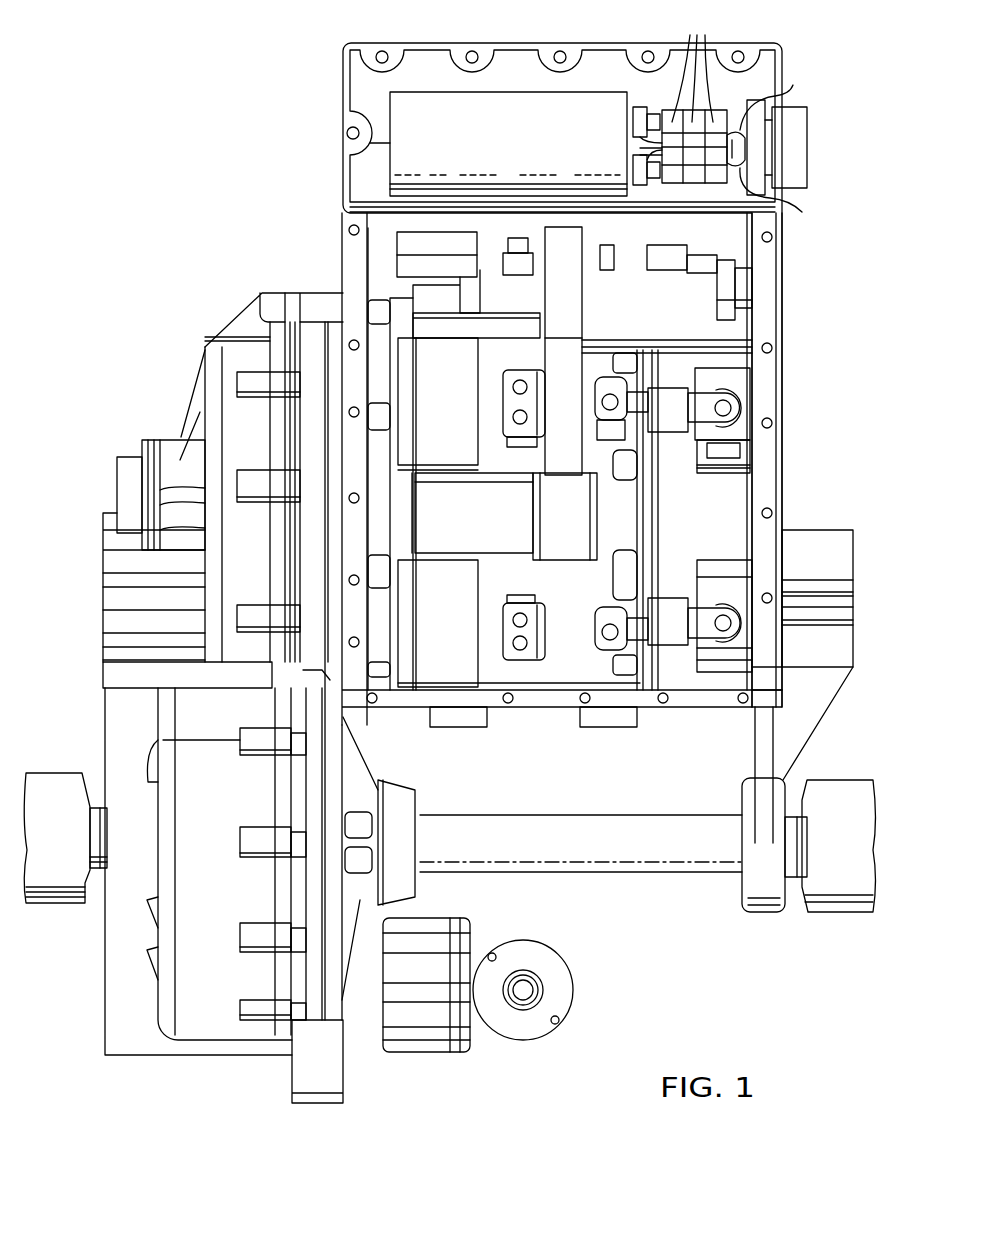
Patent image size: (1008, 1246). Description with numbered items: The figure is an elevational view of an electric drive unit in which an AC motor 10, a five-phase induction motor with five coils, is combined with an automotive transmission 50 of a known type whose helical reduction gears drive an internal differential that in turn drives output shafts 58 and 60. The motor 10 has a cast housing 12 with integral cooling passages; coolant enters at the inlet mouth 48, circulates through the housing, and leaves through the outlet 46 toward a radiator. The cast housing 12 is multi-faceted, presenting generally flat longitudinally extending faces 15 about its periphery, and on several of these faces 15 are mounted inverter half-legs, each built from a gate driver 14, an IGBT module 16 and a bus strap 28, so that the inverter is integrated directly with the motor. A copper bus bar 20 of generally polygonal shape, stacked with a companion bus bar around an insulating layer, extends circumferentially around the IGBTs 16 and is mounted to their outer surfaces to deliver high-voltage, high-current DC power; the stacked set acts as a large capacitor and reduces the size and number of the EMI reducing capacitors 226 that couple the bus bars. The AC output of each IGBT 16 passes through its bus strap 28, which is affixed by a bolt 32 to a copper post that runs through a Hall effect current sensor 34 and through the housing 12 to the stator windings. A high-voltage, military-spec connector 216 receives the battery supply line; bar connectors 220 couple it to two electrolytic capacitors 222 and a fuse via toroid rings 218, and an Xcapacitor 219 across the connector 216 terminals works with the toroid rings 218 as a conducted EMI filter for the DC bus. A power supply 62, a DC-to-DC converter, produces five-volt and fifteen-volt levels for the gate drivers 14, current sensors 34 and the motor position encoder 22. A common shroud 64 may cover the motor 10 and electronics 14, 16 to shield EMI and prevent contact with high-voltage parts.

The AC motor 10 is at (404, 289).
The cast housing 12 is at (743, 548).
The gate driver 14 is at (463, 248).
The faces 15 is at (637, 477).
The IGBT module 16 is at (600, 463).
The bus bar 20 is at (573, 243).
The motor position encoder 22 is at (125, 472).
The bus strap 28 is at (710, 392).
The bolt 32 is at (727, 420).
The current sensor 34 is at (742, 398).
The outlet 46 is at (620, 713).
The inlet mouth 48 is at (453, 713).
The automotive transmission 50 is at (174, 405).
The output shaft 58 is at (55, 780).
The output shaft 60 is at (837, 802).
The power supply 62 is at (683, 332).
The shroud 64 is at (780, 54).
The connector 216 is at (793, 157).
The toroid rings 218 is at (694, 91).
The Xcapacitor 219 is at (740, 143).
The bar connectors 220 is at (795, 148).
The electrolytic capacitors 222 is at (420, 103).
The EMI reducing capacitors 226 is at (577, 528).